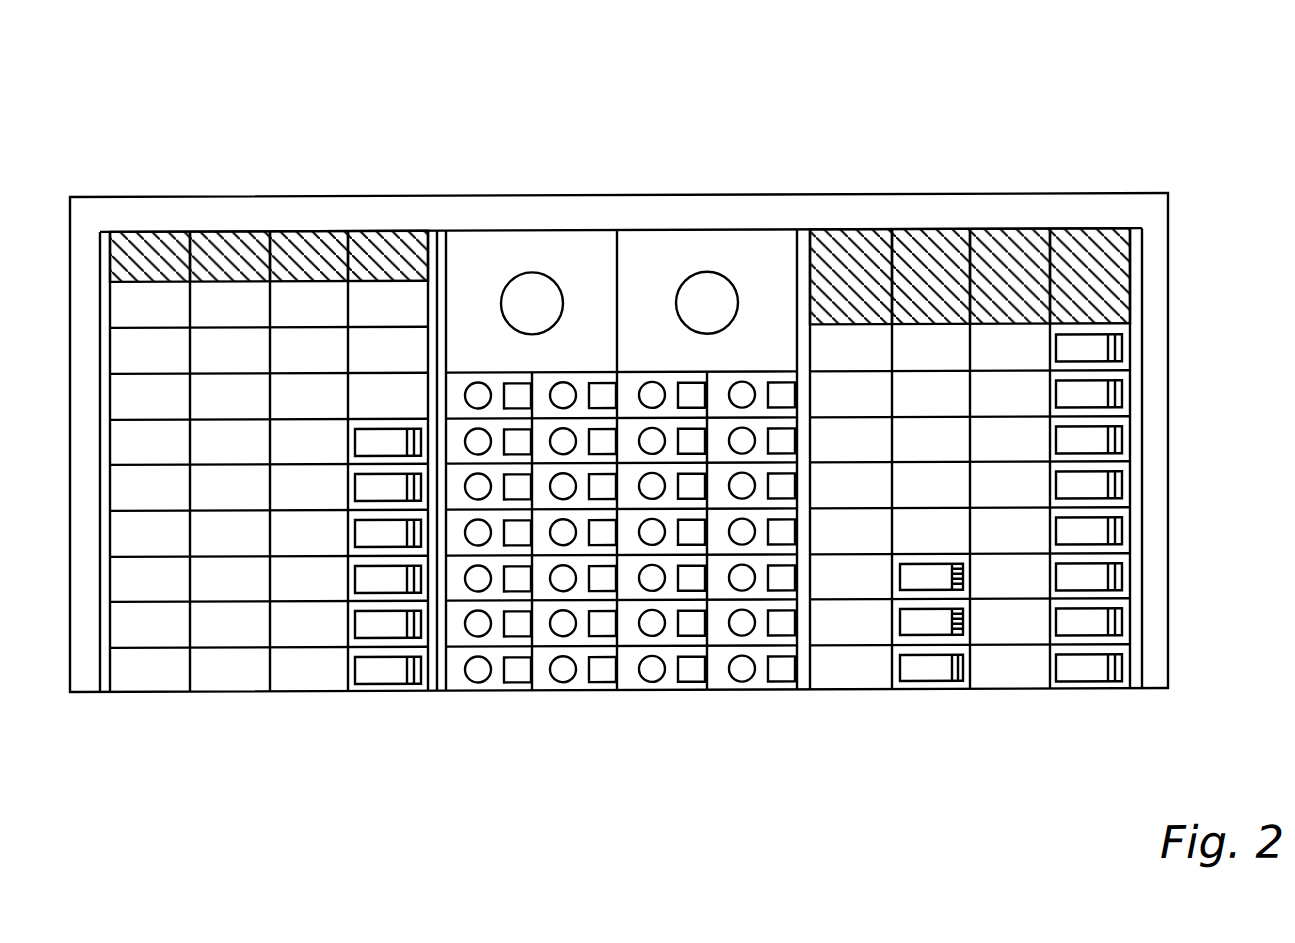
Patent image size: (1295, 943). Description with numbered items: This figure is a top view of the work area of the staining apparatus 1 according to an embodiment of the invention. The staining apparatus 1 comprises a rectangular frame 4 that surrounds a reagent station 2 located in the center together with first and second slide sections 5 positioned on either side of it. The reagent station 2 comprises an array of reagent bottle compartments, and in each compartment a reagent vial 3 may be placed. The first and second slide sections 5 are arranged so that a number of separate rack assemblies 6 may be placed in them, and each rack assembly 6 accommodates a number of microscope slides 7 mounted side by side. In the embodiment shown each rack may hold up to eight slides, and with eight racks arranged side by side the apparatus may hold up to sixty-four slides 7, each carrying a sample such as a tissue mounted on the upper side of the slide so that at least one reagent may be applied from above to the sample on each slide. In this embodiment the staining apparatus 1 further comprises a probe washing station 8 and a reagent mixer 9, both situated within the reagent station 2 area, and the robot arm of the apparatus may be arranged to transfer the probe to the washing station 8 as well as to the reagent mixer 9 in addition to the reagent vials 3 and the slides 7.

The staining apparatus 1 is at (157, 128).
The reagent station 2 is at (614, 479).
The reagent vial 3 is at (580, 387).
The rectangular frame 4 is at (266, 205).
The slide section 5 is at (689, 457).
The rack assembly 6 is at (395, 308).
The microscope slide 7 is at (1097, 350).
The probe washing station 8 is at (532, 285).
The reagent mixer 9 is at (710, 286).